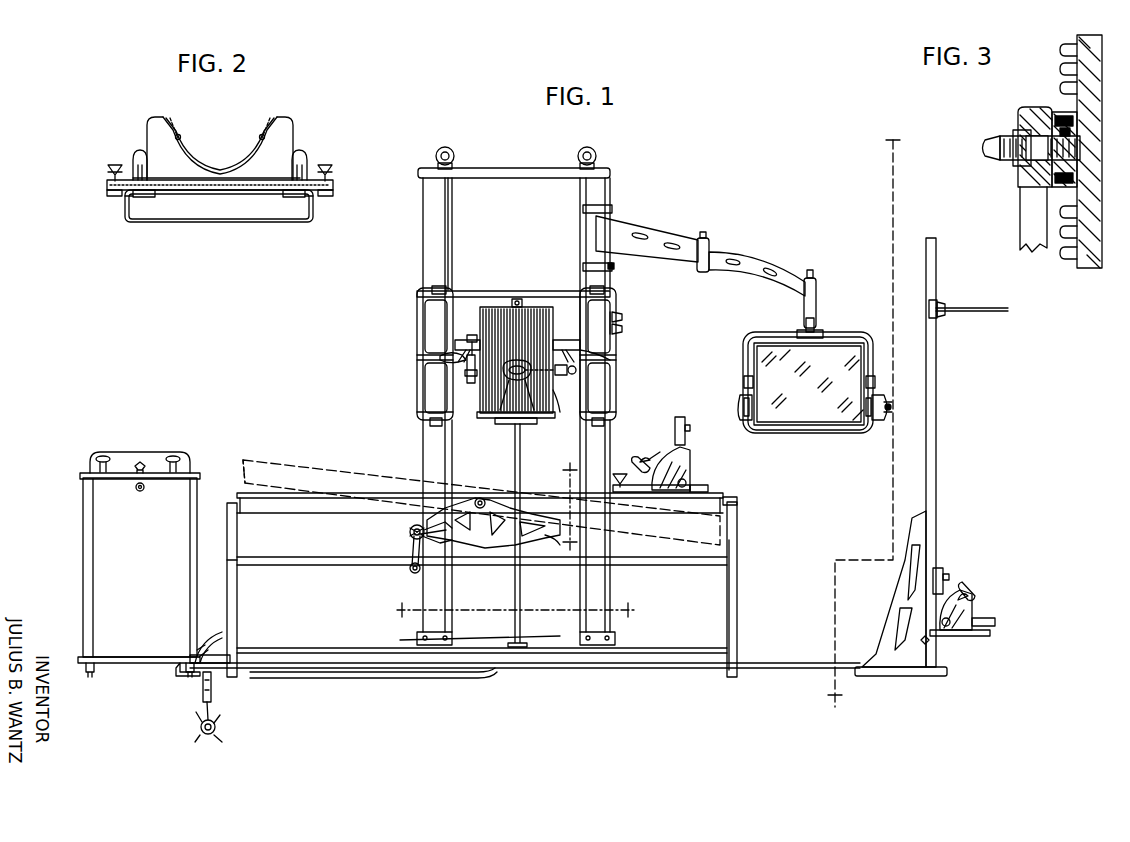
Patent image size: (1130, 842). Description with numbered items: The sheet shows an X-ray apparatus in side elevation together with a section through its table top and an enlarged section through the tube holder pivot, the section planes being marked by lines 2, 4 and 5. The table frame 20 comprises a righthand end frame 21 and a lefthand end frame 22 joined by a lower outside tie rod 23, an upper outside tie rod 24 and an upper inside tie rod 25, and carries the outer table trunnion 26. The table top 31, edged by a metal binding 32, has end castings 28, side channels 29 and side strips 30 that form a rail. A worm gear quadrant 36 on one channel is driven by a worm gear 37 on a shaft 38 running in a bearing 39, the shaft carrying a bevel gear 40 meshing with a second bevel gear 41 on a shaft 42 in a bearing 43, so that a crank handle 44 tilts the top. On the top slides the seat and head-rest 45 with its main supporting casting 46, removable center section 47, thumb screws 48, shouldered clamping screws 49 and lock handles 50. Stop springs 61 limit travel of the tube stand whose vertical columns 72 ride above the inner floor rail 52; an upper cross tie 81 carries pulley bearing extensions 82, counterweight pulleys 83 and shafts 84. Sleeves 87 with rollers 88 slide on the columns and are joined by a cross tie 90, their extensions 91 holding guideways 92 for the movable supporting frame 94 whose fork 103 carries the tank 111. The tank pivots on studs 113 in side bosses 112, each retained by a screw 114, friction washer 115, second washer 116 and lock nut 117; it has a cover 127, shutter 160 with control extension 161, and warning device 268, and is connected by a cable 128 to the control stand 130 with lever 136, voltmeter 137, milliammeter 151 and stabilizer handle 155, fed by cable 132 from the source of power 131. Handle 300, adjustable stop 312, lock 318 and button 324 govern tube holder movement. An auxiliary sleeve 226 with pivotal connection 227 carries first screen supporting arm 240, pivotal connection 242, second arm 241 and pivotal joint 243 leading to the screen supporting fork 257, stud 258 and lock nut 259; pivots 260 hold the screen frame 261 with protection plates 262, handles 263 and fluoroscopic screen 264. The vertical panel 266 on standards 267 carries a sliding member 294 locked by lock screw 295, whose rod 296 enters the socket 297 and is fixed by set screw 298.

In FIG. 1, the table frame 20 is at (738, 544).
In FIG. 1, the righthand end frame 21 is at (737, 606).
In FIG. 1, the lefthand end frame 22 is at (237, 612).
In FIG. 1, the lower outside tie rod 23 is at (282, 648).
In FIG. 1, the upper outside tie rod 24 is at (290, 566).
In FIG. 1, the upper inside tie rod 25 is at (735, 498).
In FIG. 1, the outer table trunnion 26 is at (554, 555).
In FIG. 2, the end castings 28 is at (222, 214).
In FIG. 1, the end castings 28 is at (238, 500).
In FIG. 2, the side channels 29 is at (126, 200).
In FIG. 1, the side channels 29 is at (280, 510).
In FIG. 2, the side strips 30 is at (155, 196).
In FIG. 1, the side strips 30 is at (700, 486).
In FIG. 2, the table top 31 is at (252, 190).
In FIG. 1, the table top 31 is at (198, 672).
In FIG. 2, the metal binding 32 is at (140, 152).
In FIG. 1, the worm gear quadrant 36 is at (402, 495).
In FIG. 1, the worm gear 37 is at (450, 552).
In FIG. 1, the shaft 38 is at (412, 552).
In FIG. 1, the bearing 39 is at (428, 568).
In FIG. 1, the bevel gear 40 is at (472, 508).
In FIG. 1, the second bevel gear 41 is at (410, 534).
In FIG. 1, the shaft 42 is at (400, 548).
In FIG. 1, the bearing 43 is at (400, 545).
In FIG. 1, the crank handle 44 is at (405, 548).
In FIG. 2, the combination seat and head-rest 45 is at (306, 158).
In FIG. 1, the combination seat and head-rest 45 is at (674, 425).
In FIG. 2, the main supporting casting 46 is at (290, 118).
In FIG. 2, the removable center section 47 is at (226, 120).
In FIG. 2, the thumb screws 48 is at (178, 134).
In FIG. 2, the shouldered clamping screws 49 is at (110, 196).
In FIG. 2, the lock handle 50 is at (110, 168).
In FIG. 1, the inner floor rail 52 is at (790, 669).
In FIG. 1, the stop springs 61 is at (204, 638).
In FIG. 1, the vertical columns 72 is at (428, 221).
In FIG. 1, the upper cross tie 81 is at (500, 170).
In FIG. 1, the pulley bearing extensions 82 is at (436, 166).
In FIG. 1, the counterweight pulleys 83 is at (448, 152).
In FIG. 1, the shaft 84 is at (442, 148).
In FIG. 1, the sleeves 87 is at (417, 317).
In FIG. 1, the rollers 88 is at (428, 290).
In FIG. 1, the cross tie 90 is at (488, 297).
In FIG. 1, the extensions 91 is at (466, 367).
In FIG. 1, the guideways or rods 92 is at (458, 340).
In FIG. 1, the movable supporting frame 94 is at (472, 333).
In FIG. 3, the fork 103 is at (1022, 228).
In FIG. 3, the tank 111 is at (1102, 212).
In FIG. 1, the tank 111 is at (556, 404).
In FIG. 3, the side bosses 112 is at (1066, 170).
In FIG. 3, the stud 113 is at (998, 153).
In FIG. 3, the screw 114 is at (1070, 132).
In FIG. 3, the friction washer 115 is at (1015, 166).
In FIG. 3, the second washer 116 is at (1022, 182).
In FIG. 3, the lock nut 117 is at (990, 141).
In FIG. 1, the cover 127 is at (486, 418).
In FIG. 1, the cable 128 is at (513, 471).
In FIG. 1, the control stand 130 is at (84, 508).
In FIG. 1, the source of power 131 is at (204, 734).
In FIG. 1, the cable 132 is at (212, 688).
In FIG. 1, the lever 136 is at (143, 462).
In FIG. 1, the voltmeter 137 is at (176, 455).
In FIG. 1, the milliammeter 151 is at (104, 455).
In FIG. 1, the handle 155 is at (96, 458).
In FIG. 1, the X-ray shutter 160 is at (538, 422).
In FIG. 1, the control extension 161 is at (520, 414).
In FIG. 1, the auxiliary sleeve 226 is at (612, 210).
In FIG. 1, the pivotal connection 227 is at (612, 272).
In FIG. 1, the first screen supporting arm 240 is at (655, 240).
In FIG. 1, the second screen supporting arm 241 is at (752, 265).
In FIG. 1, the pivotal connection 242 is at (710, 248).
In FIG. 1, the pivotal joint 243 is at (818, 293).
In FIG. 1, the screen supporting fork 257 is at (846, 334).
In FIG. 1, the stud 258 is at (814, 324).
In FIG. 1, the lock nut 259 is at (806, 332).
In FIG. 1, the pivots 260 is at (743, 380).
In FIG. 1, the screen frame 261 is at (836, 434).
In FIG. 1, the protection plates 262 is at (740, 406).
In FIG. 1, the handles 263 is at (744, 418).
In FIG. 1, the fluoroscopic screen 264 is at (806, 428).
In FIG. 1, the vertical panel 266 is at (936, 452).
In FIG. 1, the standards 267 is at (908, 548).
In FIG. 1, the warning device 268 is at (519, 298).
In FIG. 1, the sliding member 294 is at (942, 318).
In FIG. 1, the lock screw 295 is at (940, 306).
In FIG. 1, the rod 296 is at (1006, 312).
In FIG. 1, the socket 297 is at (886, 402).
In FIG. 1, the set screw 298 is at (892, 406).
In FIG. 1, the handle 300 is at (438, 358).
In FIG. 1, the adjustable stop 312 is at (604, 358).
In FIG. 1, the lock 318 is at (624, 323).
In FIG. 1, the button 324 is at (616, 266).
In FIG. 1, the section line 2 is at (570, 504).
In FIG. 1, the section line 4 is at (864, 418).
In FIG. 1, the section line 5 is at (515, 611).